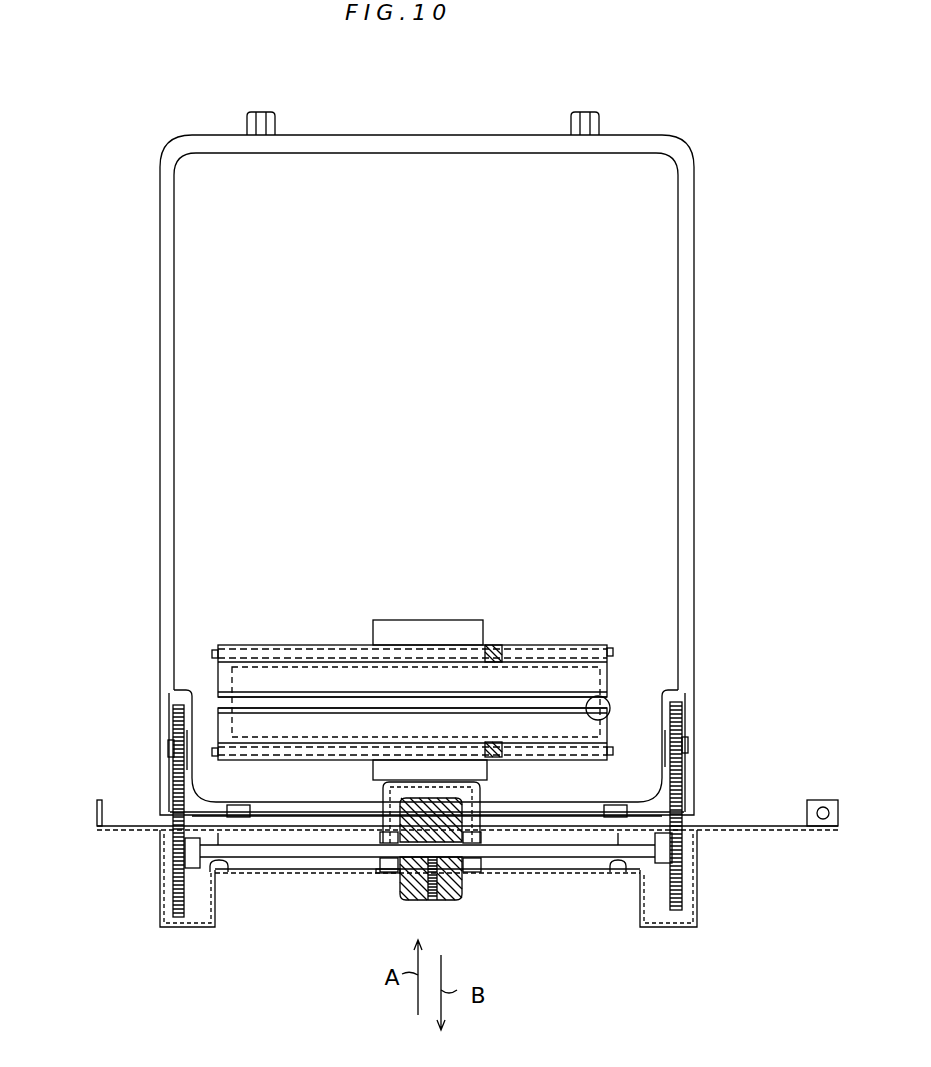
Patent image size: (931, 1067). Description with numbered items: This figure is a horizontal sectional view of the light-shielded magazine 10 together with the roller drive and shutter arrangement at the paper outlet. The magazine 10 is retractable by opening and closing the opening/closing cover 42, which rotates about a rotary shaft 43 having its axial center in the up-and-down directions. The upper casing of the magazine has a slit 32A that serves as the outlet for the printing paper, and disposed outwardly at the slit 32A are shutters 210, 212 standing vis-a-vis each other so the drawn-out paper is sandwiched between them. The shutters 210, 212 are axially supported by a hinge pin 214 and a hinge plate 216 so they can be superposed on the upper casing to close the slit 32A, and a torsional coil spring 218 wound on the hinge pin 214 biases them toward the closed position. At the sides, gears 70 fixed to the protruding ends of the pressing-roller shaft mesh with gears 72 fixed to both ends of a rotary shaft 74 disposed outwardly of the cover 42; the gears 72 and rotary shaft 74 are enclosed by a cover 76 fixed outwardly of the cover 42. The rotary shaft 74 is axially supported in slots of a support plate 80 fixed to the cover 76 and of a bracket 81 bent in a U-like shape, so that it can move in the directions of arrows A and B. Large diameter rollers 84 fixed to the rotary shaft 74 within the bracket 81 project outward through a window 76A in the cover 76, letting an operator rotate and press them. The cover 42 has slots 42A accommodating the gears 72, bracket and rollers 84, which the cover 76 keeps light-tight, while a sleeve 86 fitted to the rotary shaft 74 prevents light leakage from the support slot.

The magazine 10 is at (718, 396).
The slit 32A is at (612, 707).
The opening/closing cover 42 is at (120, 828).
The slots 42A is at (585, 822).
The rotary shaft 43 is at (814, 800).
The gears 70 is at (176, 735).
The gears 72 is at (178, 900).
The rotary shaft 74 is at (330, 858).
The cover 76 is at (275, 871).
The window 76A is at (383, 872).
The support plate 80 is at (222, 872).
The bracket 81 is at (476, 810).
The large diameter rollers 84 is at (442, 893).
The sleeve 86 is at (388, 870).
The shutter 210 is at (305, 732).
The shutter 212 is at (285, 676).
The hinge pin 214 is at (212, 651).
The hinge plate 216 is at (422, 633).
The torsional coil spring 218 is at (498, 660).